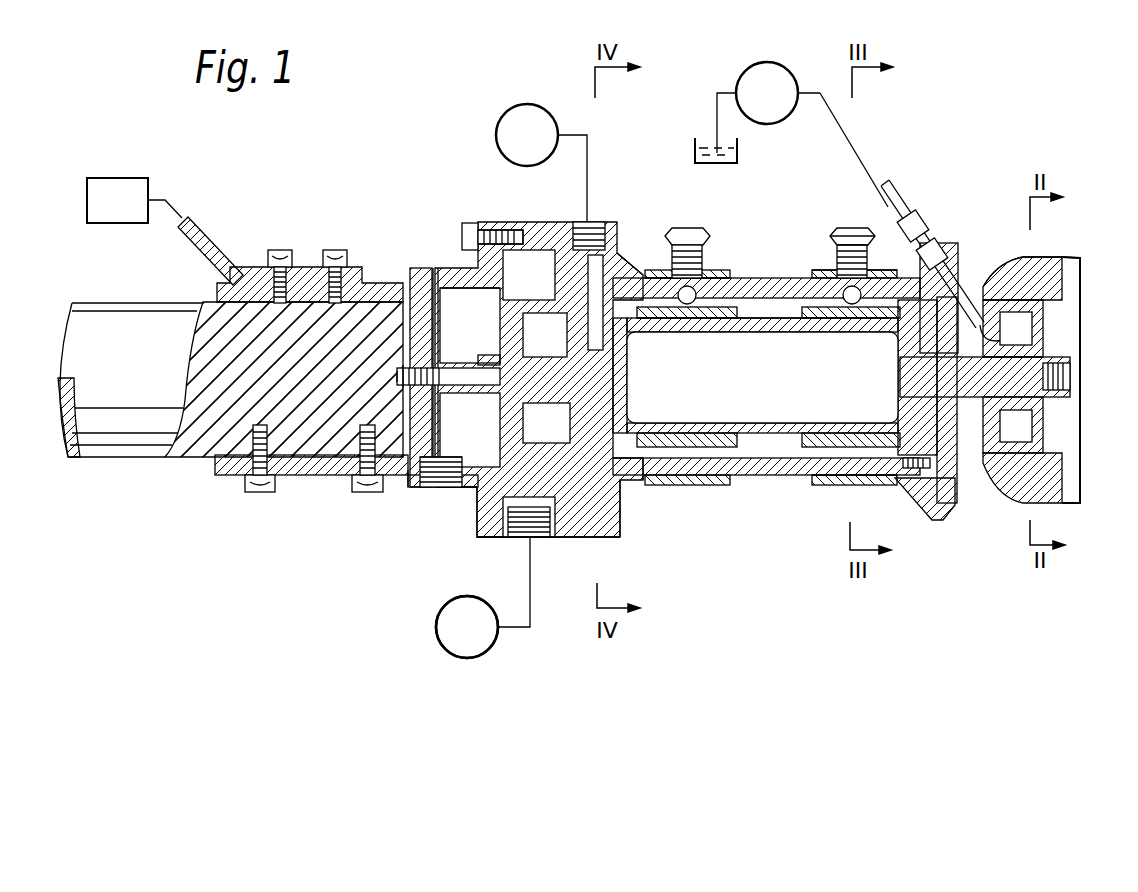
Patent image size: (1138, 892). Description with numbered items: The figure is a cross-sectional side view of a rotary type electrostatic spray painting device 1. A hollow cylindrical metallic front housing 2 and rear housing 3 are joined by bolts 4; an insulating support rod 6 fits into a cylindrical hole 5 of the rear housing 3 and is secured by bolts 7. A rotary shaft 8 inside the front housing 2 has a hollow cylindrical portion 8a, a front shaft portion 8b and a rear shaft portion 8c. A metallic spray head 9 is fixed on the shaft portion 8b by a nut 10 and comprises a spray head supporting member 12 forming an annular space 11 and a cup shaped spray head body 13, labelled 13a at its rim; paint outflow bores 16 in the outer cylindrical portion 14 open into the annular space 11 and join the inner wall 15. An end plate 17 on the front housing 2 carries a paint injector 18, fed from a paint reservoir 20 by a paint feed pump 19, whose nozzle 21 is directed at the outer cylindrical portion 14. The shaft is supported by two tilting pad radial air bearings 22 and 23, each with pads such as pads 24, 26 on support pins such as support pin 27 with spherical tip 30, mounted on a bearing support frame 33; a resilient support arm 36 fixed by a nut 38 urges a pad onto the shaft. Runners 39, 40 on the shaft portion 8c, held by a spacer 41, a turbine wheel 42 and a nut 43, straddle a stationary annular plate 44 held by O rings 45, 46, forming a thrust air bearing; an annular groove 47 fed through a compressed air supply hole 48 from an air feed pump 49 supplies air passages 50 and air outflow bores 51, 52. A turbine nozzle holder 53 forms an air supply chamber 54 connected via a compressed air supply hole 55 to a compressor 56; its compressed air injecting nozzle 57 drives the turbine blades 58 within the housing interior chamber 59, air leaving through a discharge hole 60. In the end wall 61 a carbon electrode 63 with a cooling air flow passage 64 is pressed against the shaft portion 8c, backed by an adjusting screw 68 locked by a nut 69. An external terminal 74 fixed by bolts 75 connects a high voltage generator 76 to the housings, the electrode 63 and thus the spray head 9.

The rotary type electrostatic spray painting device 1 is at (612, 222).
The front housing 2 is at (762, 278).
The rear housing 3 is at (420, 268).
The bolts 4 is at (468, 224).
The cylindrical hole 5 is at (298, 468).
The support rod 6 is at (130, 442).
The bolts 7 is at (252, 493).
The rotary shaft 8 is at (762, 448).
The hollow cylindrical portion 8a is at (768, 332).
The shaft portion 8b is at (975, 400).
The shaft portion 8c is at (468, 470).
The spray head 9 is at (1072, 250).
The nut 10 is at (1048, 410).
The annular space 11 is at (1016, 330).
The spray head supporting member 12 is at (1048, 350).
The spray head body 13 is at (1045, 257).
The cap corner 13a is at (1076, 260).
The outer cylindrical portion 14 is at (1035, 315).
The inner wall 15 is at (1050, 280).
The paint outflow bores 16 is at (1036, 300).
The end plate 17 is at (945, 508).
The paint injector 18 is at (925, 215).
The paint feed pump 19 is at (780, 70).
The paint reservoir 20 is at (740, 155).
The nozzle 21 is at (982, 320).
The tilting pad radial air bearing 22 is at (812, 268).
The tilting pad radial air bearing 23 is at (712, 272).
The pad 24 is at (800, 278).
The pad 26 is at (830, 450).
The support pin 27 is at (838, 304).
The spherical tip 30 is at (853, 304).
The bearing support frame 33 is at (862, 262).
The support arm 36 is at (835, 240).
The nut 38 is at (852, 228).
The runner 39 is at (645, 482).
The runner 40 is at (578, 537).
The spacer 41 is at (560, 420).
The turbine wheel 42 is at (495, 315).
The nut 43 is at (486, 356).
The annular plate 44 is at (618, 520).
The O ring 45 is at (620, 285).
The O ring 46 is at (528, 248).
The annular groove 47 is at (606, 260).
The compressed air supply hole 48 is at (590, 235).
The air feed pump 49 is at (538, 112).
The air passages 50 is at (552, 275).
The air outflow bores 51 is at (562, 333).
The air outflow bores 52 is at (632, 345).
The turbine nozzle holder 53 is at (557, 540).
The air supply chamber 54 is at (512, 248).
The compressed air supply hole 55 is at (525, 537).
The compressor 56 is at (437, 650).
The compressed air injecting nozzle 57 is at (498, 530).
The turbine blades 58 is at (470, 498).
The housing interior chamber 59 is at (445, 487).
The discharge hole 60 is at (428, 487).
The end wall 61 is at (410, 480).
The electrode 63 is at (462, 355).
The cooling air flow passage 64 is at (392, 340).
The adjusting screw 68 is at (382, 387).
The nut 69 is at (398, 383).
The external terminal 74 is at (195, 219).
The bolts 75 is at (276, 250).
The high voltage generator 76 is at (120, 223).